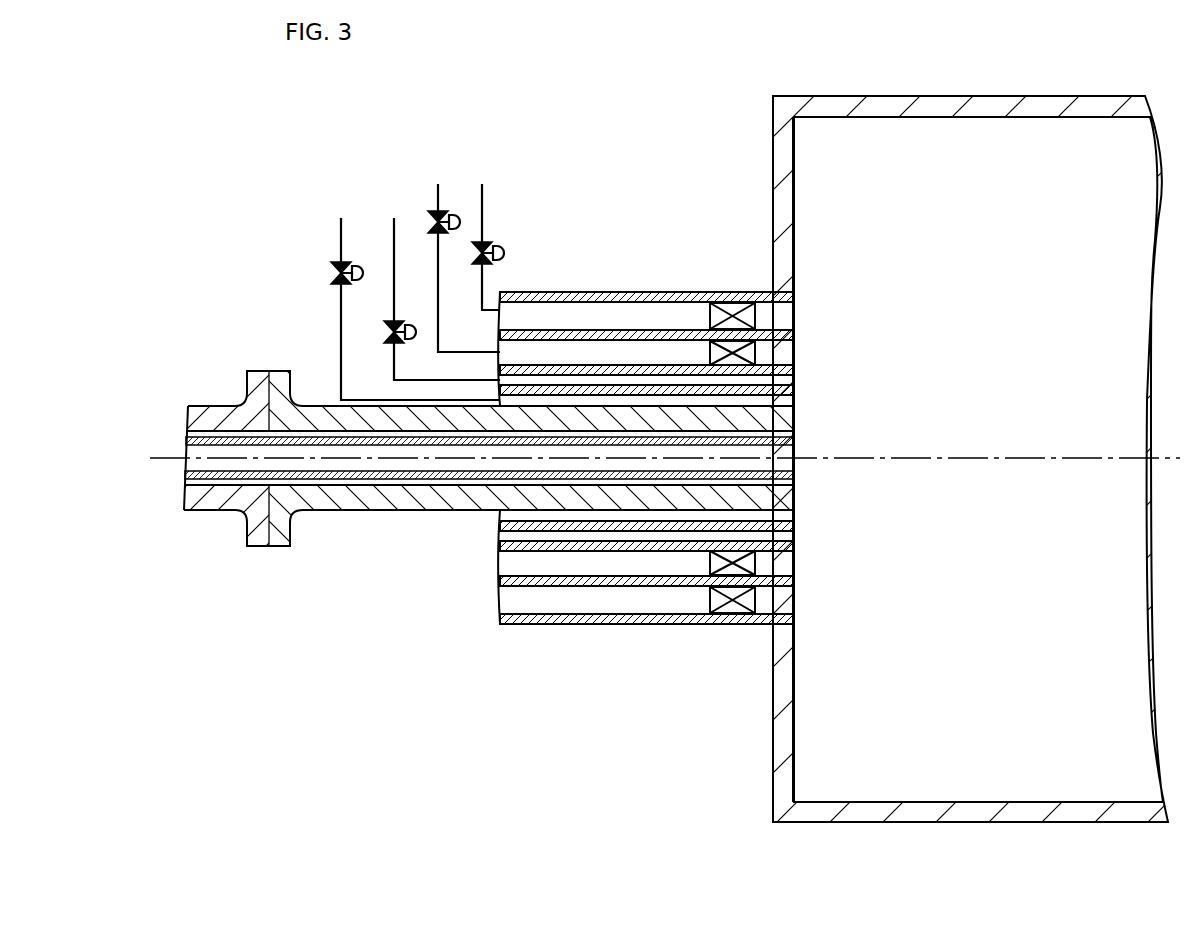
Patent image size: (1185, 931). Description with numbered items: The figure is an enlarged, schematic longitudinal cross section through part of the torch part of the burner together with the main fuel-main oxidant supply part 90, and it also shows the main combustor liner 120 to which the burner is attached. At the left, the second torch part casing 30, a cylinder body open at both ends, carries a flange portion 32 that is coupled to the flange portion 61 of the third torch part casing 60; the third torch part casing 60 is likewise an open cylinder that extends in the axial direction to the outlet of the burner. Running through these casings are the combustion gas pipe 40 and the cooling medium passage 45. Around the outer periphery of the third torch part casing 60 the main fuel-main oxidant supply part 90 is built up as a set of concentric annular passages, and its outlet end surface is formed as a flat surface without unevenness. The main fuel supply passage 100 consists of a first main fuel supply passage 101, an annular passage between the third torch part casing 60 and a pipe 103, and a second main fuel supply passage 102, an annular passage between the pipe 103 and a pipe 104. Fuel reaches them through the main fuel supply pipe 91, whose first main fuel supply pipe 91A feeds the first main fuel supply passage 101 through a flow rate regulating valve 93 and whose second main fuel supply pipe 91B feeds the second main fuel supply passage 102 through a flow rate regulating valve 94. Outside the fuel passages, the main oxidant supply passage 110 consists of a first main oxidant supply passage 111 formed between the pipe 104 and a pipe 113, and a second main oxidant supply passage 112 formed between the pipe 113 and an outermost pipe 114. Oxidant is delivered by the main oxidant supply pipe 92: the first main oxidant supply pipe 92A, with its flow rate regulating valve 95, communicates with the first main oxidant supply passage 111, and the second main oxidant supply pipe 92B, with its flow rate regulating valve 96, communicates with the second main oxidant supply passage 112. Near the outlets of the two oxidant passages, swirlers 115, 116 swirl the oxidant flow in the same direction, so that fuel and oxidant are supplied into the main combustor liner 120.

The second torch part casing 30 is at (245, 458).
The flange portion 32 is at (258, 380).
The combustion gas pipe 40 is at (218, 479).
The cooling medium passage 45 is at (332, 486).
The third torch part casing 60 is at (488, 458).
The flange portion 61 is at (280, 531).
The main fuel-main oxidant supply part 90 is at (737, 459).
The main fuel supply pipe 91 is at (391, 257).
The first main fuel supply pipe 91A is at (394, 283).
The second main fuel supply pipe 91B is at (433, 273).
The main oxidant supply pipe 92 is at (490, 200).
The first main oxidant supply pipe 92A is at (463, 225).
The second main oxidant supply pipe 92B is at (514, 204).
The flow rate regulating valve 93 is at (339, 285).
The flow rate regulating valve 94 is at (393, 320).
The flow rate regulating valve 95 is at (440, 234).
The flow rate regulating valve 96 is at (497, 247).
The main fuel supply passage 100 is at (738, 436).
The first main fuel supply passage 101 is at (793, 400).
The second main fuel supply passage 102 is at (793, 385).
The pipe 103 is at (783, 412).
The pipe 104 is at (793, 369).
The main oxidant supply passage 110 is at (733, 389).
The first main oxidant supply passage 111 is at (793, 350).
The second main oxidant supply passage 112 is at (794, 315).
The pipe 113 is at (765, 328).
The pipe 114 is at (795, 295).
The swirler 115 is at (710, 353).
The swirler 116 is at (733, 303).
The main combustor liner 120 is at (911, 810).